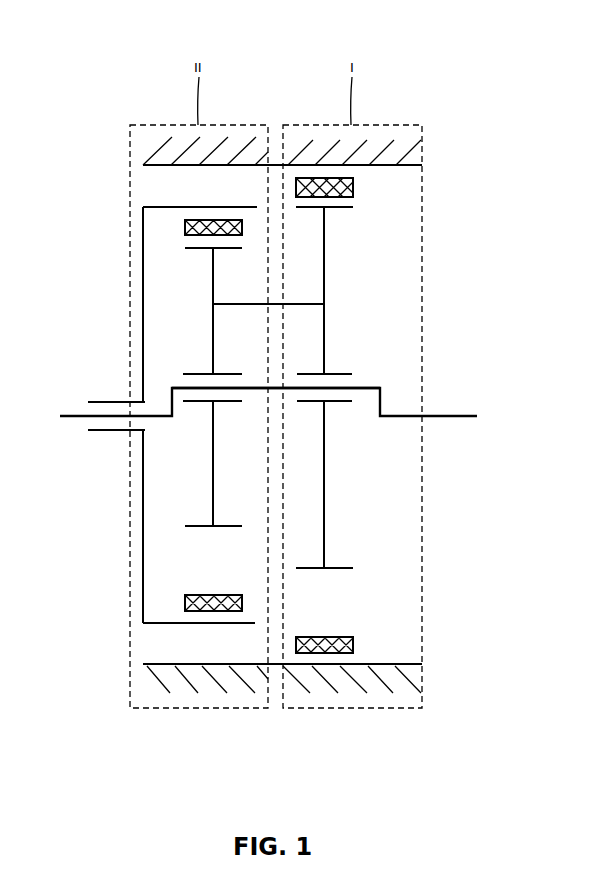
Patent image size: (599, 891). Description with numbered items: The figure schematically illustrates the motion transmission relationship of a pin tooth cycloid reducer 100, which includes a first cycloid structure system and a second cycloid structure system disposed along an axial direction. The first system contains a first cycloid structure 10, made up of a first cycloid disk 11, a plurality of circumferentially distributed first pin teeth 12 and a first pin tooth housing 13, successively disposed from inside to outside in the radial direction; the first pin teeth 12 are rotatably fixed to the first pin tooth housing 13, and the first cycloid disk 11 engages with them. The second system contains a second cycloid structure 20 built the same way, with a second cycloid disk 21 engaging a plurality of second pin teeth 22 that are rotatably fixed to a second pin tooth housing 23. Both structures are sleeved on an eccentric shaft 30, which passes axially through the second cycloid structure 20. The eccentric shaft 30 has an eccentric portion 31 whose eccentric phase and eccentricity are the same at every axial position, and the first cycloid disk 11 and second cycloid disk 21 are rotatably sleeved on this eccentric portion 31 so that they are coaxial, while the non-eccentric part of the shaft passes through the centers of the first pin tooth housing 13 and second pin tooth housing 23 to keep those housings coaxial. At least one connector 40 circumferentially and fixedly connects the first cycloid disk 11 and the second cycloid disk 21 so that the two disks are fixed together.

The pin tooth cycloid reducer 100 is at (168, 63).
The first cycloid structure 10 is at (282, 415).
The first cycloid disk 11 is at (339, 387).
The first pin teeth 12 is at (333, 187).
The first pin tooth housing 13 is at (393, 167).
The second cycloid structure 20 is at (172, 415).
The second cycloid disk 21 is at (211, 250).
The second pin teeth 22 is at (203, 233).
The second pin tooth housing 23 is at (164, 209).
The eccentric shaft 30 is at (455, 418).
The eccentric portion 31 is at (362, 390).
The connector 40 is at (237, 306).